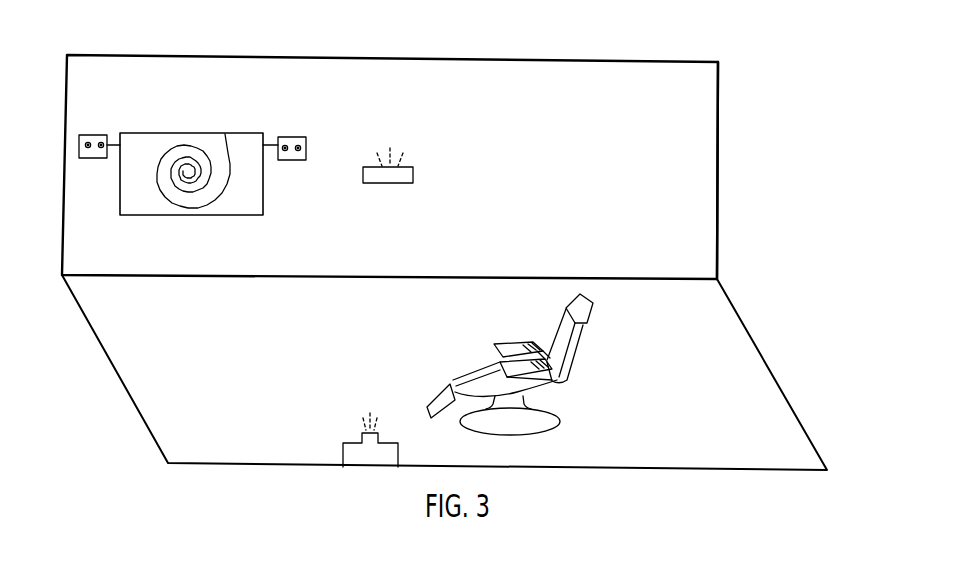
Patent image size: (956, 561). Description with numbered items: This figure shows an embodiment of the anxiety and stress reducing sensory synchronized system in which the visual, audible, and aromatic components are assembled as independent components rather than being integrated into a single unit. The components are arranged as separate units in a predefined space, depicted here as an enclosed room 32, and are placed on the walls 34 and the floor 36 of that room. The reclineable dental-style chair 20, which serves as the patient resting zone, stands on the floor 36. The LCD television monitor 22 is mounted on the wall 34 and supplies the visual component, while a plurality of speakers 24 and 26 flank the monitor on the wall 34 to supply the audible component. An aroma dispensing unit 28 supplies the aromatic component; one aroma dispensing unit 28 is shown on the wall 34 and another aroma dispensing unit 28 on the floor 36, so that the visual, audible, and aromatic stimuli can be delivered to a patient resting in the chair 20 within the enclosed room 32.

The reclineable dental-style chair 20 is at (580, 352).
The LCD television monitor 22 is at (196, 133).
The speaker 24 is at (97, 135).
The speaker 26 is at (290, 137).
The aroma dispensing unit 28 is at (413, 170).
The enclosed room 32 is at (688, 144).
The wall 34 is at (558, 72).
The floor 36 is at (732, 377).